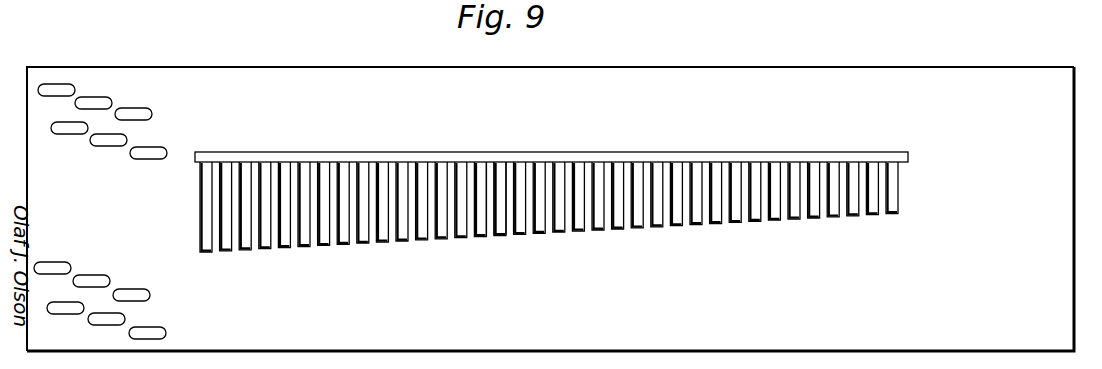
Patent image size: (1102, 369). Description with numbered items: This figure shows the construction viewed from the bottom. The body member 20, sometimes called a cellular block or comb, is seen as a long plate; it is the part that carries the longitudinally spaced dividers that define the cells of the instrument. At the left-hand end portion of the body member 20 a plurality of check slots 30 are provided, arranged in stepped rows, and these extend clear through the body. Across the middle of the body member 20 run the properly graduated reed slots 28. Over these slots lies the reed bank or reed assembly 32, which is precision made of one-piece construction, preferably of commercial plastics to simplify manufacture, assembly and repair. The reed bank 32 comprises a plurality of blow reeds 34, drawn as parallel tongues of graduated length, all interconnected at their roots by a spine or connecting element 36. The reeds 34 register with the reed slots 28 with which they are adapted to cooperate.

The body member 20 is at (695, 77).
The reed slots 28 is at (860, 210).
The check slots 30 is at (153, 112).
The reed bank 32 is at (575, 185).
The reeds 34 is at (497, 237).
The spine 36 is at (538, 158).